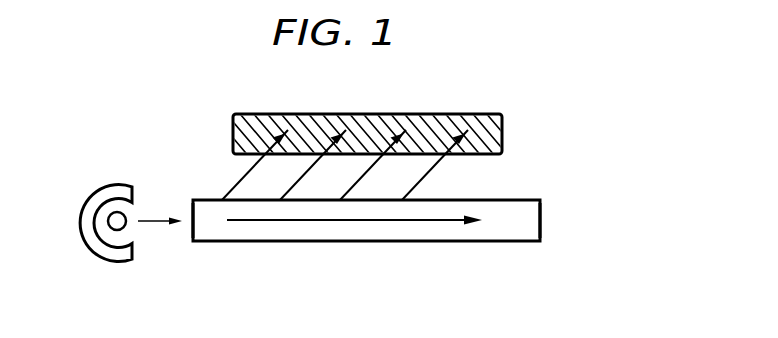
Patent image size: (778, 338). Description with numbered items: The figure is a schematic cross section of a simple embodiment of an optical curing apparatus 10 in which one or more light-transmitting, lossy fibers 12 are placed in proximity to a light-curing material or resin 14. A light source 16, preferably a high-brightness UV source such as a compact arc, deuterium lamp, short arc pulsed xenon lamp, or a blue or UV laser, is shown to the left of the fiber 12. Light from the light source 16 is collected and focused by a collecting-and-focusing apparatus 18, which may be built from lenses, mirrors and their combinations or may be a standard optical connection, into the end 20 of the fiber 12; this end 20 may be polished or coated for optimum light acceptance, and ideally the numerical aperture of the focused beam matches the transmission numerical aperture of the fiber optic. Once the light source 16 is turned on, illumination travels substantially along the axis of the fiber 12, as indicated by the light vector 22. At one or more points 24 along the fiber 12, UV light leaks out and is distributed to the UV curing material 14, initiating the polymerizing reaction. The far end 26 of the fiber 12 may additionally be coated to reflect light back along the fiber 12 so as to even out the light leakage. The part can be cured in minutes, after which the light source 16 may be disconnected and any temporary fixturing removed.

The optical curing apparatus 10 is at (264, 255).
The light-transmitting, lossy fiber 12 is at (413, 241).
The light-curing material 14 is at (482, 114).
The light source 16 is at (125, 227).
The collecting-and-focusing apparatus 18 is at (97, 188).
The end of fiber 20 is at (192, 215).
The light vector 22 is at (330, 221).
The points along the fiber 24 is at (241, 180).
The far end 26 is at (540, 213).